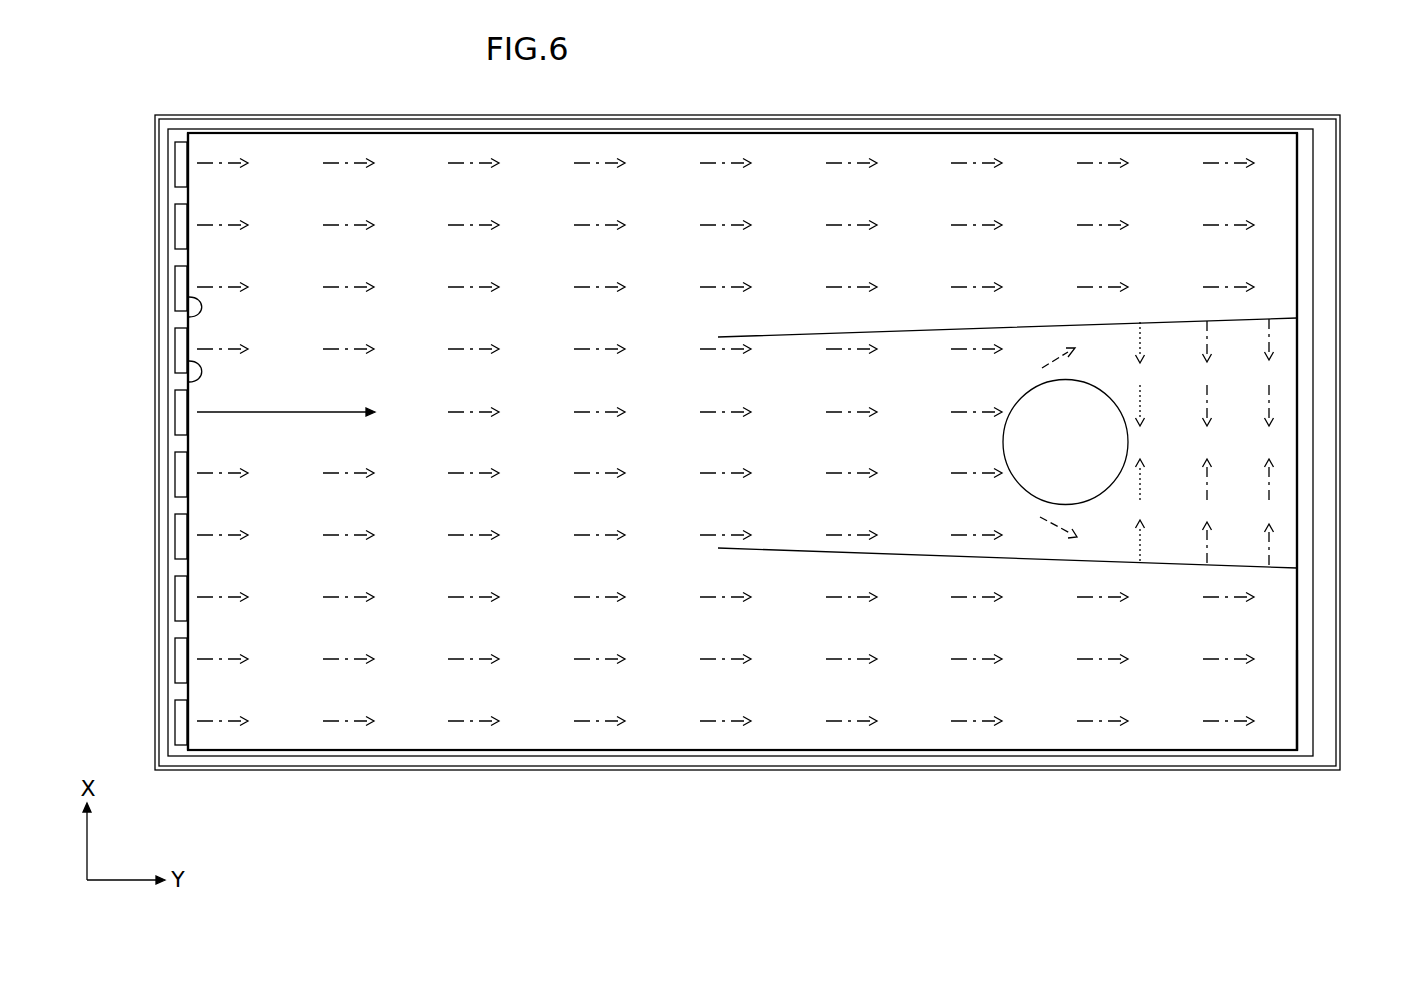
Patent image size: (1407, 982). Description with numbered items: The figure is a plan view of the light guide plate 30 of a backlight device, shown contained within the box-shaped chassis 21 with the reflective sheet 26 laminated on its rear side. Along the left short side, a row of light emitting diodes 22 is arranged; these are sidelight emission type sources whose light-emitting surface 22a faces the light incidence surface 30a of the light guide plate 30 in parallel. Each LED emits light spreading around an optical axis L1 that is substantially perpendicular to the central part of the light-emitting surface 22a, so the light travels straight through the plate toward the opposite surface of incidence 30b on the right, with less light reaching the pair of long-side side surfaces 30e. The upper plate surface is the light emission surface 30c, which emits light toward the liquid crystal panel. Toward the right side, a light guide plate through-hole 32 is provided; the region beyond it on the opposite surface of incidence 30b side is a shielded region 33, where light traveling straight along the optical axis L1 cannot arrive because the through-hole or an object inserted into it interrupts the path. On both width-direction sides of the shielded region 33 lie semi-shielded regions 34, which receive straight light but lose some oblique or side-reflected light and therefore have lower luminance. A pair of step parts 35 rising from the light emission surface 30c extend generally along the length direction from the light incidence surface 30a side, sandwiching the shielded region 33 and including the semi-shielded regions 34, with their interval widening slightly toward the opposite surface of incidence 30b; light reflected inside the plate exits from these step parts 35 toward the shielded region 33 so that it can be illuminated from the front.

The chassis 21 is at (1092, 116).
The light emitting diodes 22 is at (178, 230).
The light-emitting surface 22a is at (190, 382).
The reflective sheet 26 is at (1307, 182).
The light guide plate 30 is at (806, 154).
The light incidence surface 30a is at (186, 626).
The opposite surface of incidence 30b is at (1297, 483).
The light emission surface 30c is at (1158, 728).
The side surfaces 30e is at (716, 134).
The light guide plate through-hole 32 is at (1017, 482).
The shielded region 33 is at (1220, 438).
The semi-shielded regions 34 is at (1165, 345).
The step parts 35 is at (1237, 319).
The optical axis L1 is at (277, 412).